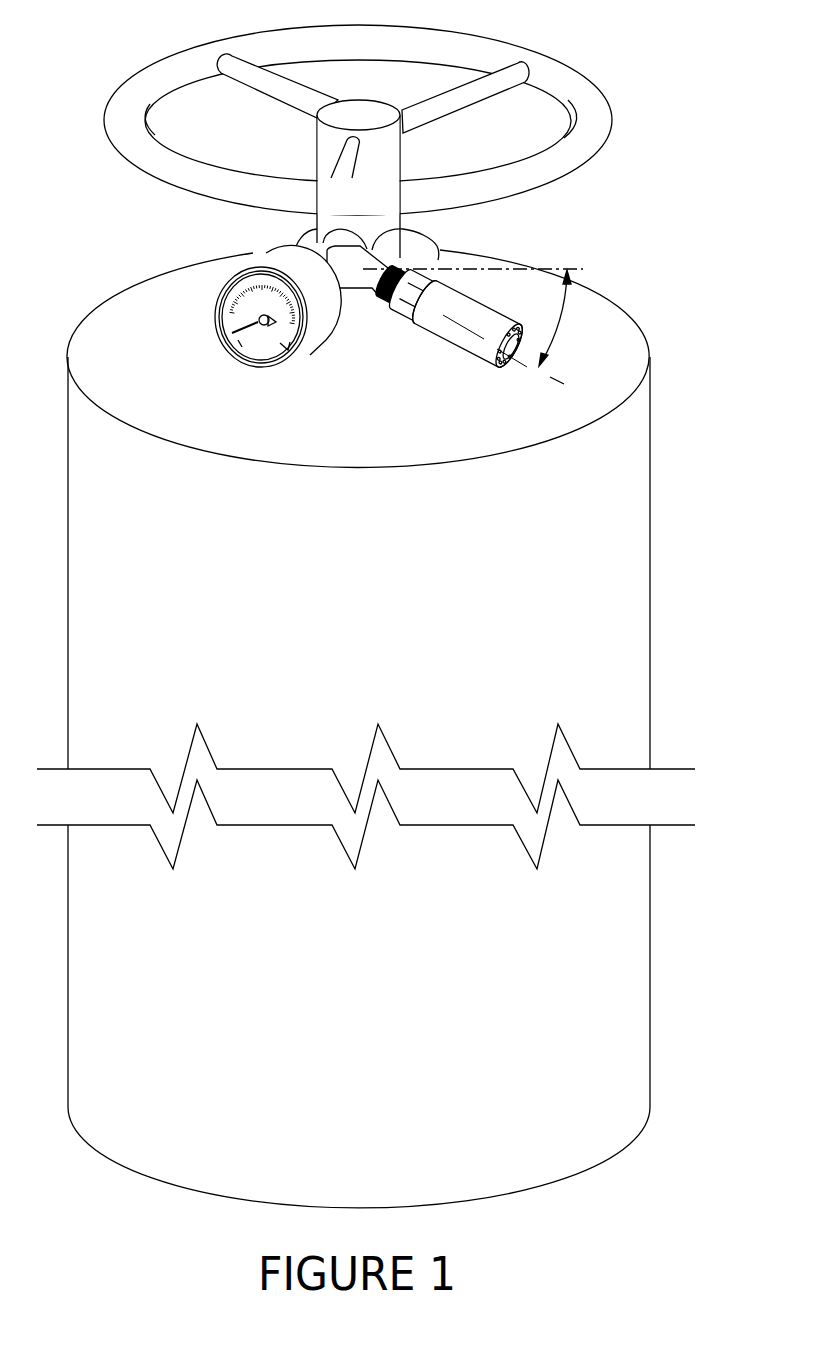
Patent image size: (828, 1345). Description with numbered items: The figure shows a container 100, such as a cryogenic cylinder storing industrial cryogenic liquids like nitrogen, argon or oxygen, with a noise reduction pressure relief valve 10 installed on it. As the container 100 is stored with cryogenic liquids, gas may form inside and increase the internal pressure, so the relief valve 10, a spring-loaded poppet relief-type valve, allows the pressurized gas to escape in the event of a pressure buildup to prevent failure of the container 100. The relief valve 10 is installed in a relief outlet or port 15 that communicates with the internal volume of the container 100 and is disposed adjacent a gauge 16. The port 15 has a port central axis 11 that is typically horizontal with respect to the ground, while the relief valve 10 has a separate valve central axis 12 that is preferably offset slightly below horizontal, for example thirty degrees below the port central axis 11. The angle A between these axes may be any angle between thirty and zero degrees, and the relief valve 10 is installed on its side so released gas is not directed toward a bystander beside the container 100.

The relief valve 10 is at (455, 342).
The port central axis 11 is at (540, 268).
The valve central axis 12 is at (550, 377).
The relief outlet or port 15 is at (440, 238).
The gauge 16 is at (258, 258).
The container 100 is at (613, 598).
The angle A is at (558, 318).